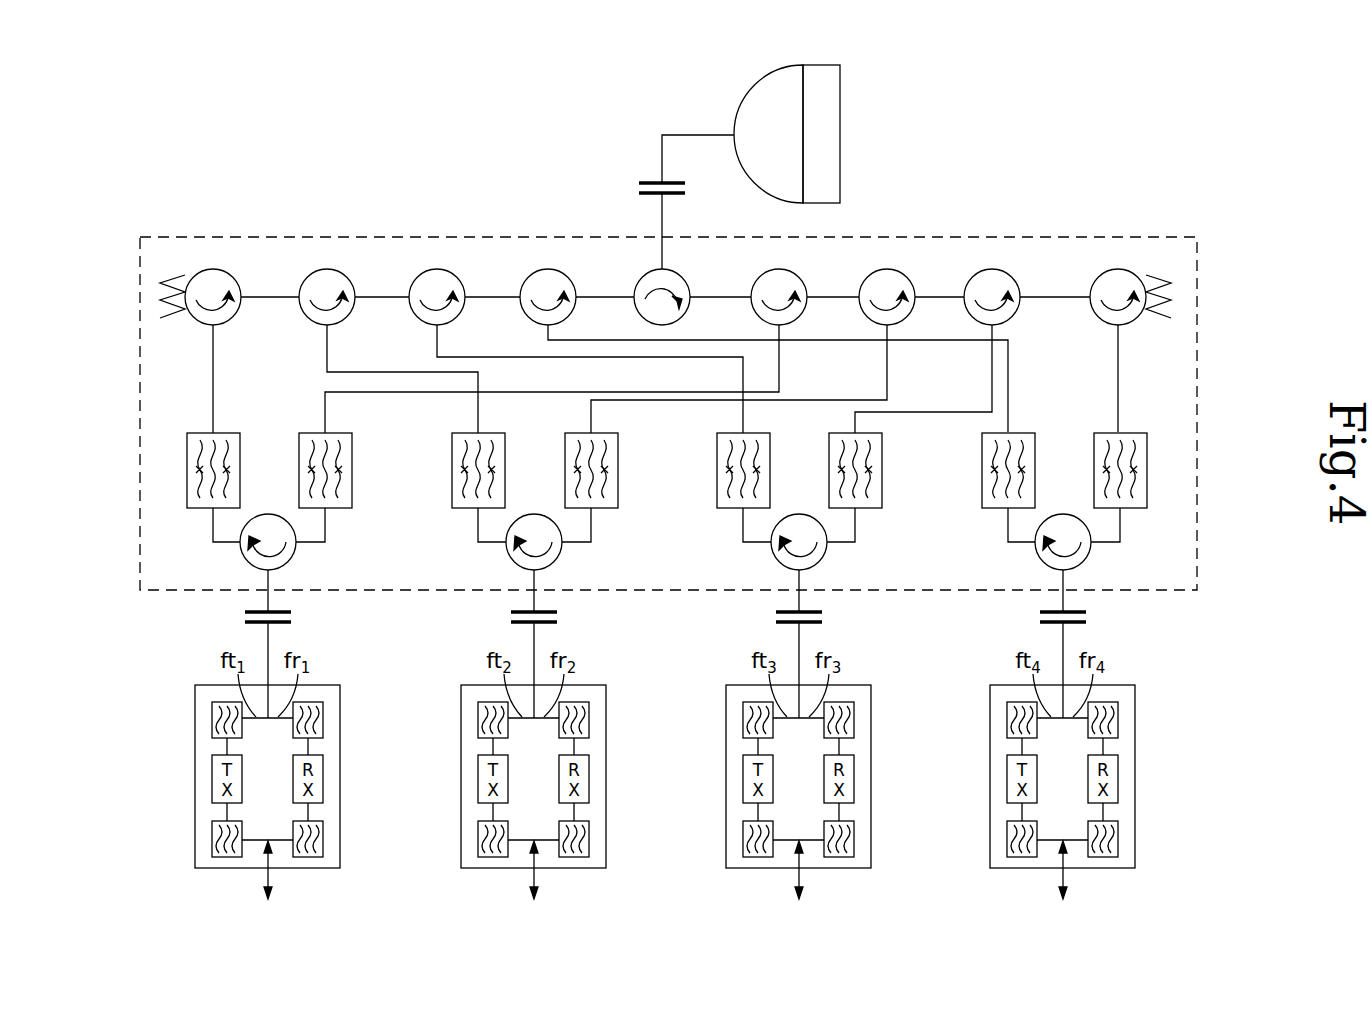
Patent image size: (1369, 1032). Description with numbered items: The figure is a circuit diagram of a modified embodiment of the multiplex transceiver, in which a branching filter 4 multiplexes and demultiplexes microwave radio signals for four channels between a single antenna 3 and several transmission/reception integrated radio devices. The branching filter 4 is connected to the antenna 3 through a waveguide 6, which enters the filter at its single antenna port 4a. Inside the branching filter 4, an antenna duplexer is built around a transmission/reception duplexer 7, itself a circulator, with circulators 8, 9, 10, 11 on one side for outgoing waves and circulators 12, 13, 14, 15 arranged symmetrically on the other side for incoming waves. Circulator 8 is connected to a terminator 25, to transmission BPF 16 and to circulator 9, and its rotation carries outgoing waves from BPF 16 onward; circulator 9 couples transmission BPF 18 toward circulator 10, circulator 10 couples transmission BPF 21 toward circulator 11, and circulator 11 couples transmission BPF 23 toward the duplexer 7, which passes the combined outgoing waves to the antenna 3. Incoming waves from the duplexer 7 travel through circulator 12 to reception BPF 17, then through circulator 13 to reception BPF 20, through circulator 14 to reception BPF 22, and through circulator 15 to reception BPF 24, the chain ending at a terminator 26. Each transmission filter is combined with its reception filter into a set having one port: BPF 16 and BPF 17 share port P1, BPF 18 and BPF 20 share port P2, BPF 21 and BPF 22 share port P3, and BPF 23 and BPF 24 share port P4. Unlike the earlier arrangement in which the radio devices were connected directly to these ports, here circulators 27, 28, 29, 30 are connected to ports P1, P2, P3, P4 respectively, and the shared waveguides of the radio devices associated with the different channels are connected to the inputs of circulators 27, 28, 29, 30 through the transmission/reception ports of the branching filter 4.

The antenna 3 is at (840, 80).
The branching filter 4 is at (160, 237).
The antenna port 4a is at (653, 182).
The waveguide 6 is at (697, 135).
The transmission/reception duplexer 7 is at (646, 272).
The circulator 8 is at (213, 269).
The circulator 9 is at (327, 269).
The circulator 10 is at (437, 269).
The circulator 11 is at (548, 269).
The circulator 12 is at (779, 269).
The circulator 13 is at (887, 269).
The circulator 14 is at (992, 269).
The circulator 15 is at (1118, 269).
The transmission band pass filter 16 is at (202, 433).
The reception band pass filter 17 is at (312, 433).
The transmission band pass filter 18 is at (455, 433).
The reception band pass filter 20 is at (568, 433).
The transmission band pass filter 21 is at (718, 441).
The reception band pass filter 22 is at (829, 455).
The transmission band pass filter 23 is at (982, 446).
The reception band pass filter 24 is at (1100, 433).
The terminator 25 is at (176, 279).
The terminator 26 is at (1160, 275).
The circulator 27 is at (297, 557).
The circulator 28 is at (563, 557).
The circulator 29 is at (828, 557).
The circulator 30 is at (1092, 557).
The port P1 is at (266, 573).
The port P2 is at (532, 573).
The port P3 is at (797, 573).
The port P4 is at (1061, 573).